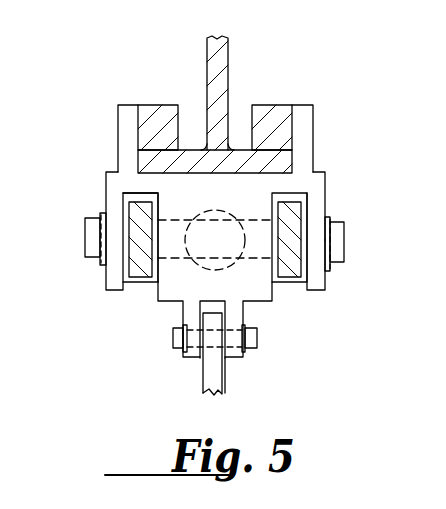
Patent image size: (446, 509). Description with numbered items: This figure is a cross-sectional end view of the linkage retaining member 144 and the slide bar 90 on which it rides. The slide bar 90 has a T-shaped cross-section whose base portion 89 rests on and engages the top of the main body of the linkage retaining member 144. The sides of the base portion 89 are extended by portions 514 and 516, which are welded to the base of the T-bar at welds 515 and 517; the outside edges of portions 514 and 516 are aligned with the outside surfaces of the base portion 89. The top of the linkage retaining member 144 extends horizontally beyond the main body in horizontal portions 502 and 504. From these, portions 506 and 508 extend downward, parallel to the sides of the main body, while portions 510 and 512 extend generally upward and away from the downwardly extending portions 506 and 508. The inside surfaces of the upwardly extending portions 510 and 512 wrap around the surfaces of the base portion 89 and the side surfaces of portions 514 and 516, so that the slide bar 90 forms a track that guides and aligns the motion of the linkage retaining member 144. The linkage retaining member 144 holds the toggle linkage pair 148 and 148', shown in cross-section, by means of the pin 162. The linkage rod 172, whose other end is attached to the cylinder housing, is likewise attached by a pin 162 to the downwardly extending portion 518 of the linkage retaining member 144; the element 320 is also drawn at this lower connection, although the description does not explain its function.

The slide bar 90 is at (216, 54).
The welded portion 514 is at (153, 112).
The welded portion 516 is at (282, 108).
The weld 515 is at (184, 147).
The weld 517 is at (245, 148).
The base portion 89 is at (287, 163).
The upwardly extending portion 512 is at (128, 135).
The upwardly extending portion 510 is at (305, 137).
The horizontal portion 504 is at (143, 183).
The horizontal portion 502 is at (287, 187).
The downwardly extending portion 506 is at (315, 283).
The downwardly extending portion 508 is at (117, 273).
The pin 162 is at (341, 252).
The toggle linkage 148 is at (113, 269).
The toggle linkage 148' is at (332, 273).
The linkage retaining member 144 is at (262, 297).
The sleeve 320 is at (236, 358).
The linkage rod 172 is at (212, 388).
The downwardly extending portion 518 is at (183, 357).